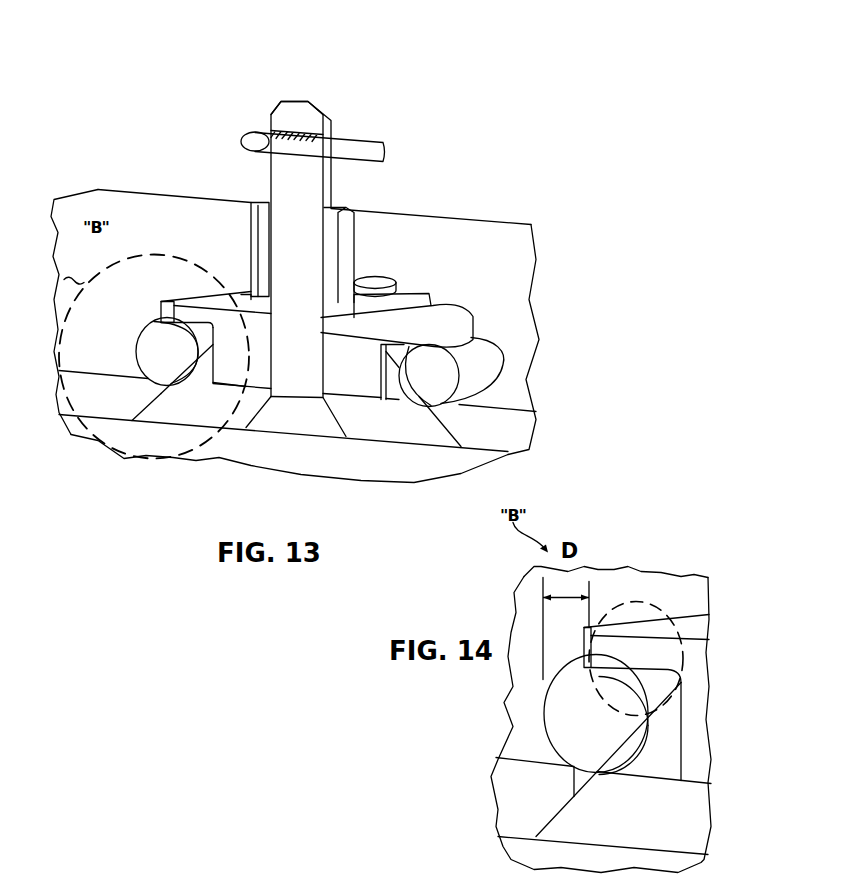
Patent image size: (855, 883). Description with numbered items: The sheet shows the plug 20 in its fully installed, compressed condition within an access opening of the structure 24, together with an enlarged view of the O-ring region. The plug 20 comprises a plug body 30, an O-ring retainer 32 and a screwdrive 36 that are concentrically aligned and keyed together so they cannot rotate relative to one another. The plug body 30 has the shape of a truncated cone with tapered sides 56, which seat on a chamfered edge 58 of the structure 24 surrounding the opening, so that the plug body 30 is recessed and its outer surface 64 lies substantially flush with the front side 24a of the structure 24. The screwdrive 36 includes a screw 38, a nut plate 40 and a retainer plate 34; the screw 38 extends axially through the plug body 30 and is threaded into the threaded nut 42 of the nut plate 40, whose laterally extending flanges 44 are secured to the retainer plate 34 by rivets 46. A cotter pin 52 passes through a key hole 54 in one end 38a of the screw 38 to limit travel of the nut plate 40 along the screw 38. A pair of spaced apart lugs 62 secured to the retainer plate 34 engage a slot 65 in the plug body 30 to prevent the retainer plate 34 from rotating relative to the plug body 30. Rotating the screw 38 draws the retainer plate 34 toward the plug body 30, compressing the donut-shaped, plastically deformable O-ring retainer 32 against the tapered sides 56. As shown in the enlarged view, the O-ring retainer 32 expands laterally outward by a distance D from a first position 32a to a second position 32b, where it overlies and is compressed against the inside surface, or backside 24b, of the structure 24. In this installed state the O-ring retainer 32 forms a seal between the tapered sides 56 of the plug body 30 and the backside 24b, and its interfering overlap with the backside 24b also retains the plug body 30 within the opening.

In FIG. 13, the plug 20 is at (196, 105).
In FIG. 13, the structure 24 is at (295, 322).
In FIG. 14, the structure 24 is at (527, 815).
In FIG. 13, the front side 24a is at (507, 463).
In FIG. 13, the backside 24b is at (70, 217).
In FIG. 14, the backside 24b is at (533, 592).
In FIG. 13, the plug body 30 is at (390, 427).
In FIG. 14, the plug body 30 is at (690, 828).
In FIG. 13, the O-ring retainer 32 is at (487, 347).
In FIG. 14, the O-ring retainer 32 is at (567, 708).
In FIG. 13, the first position 32a is at (189, 277).
In FIG. 14, the first position 32a is at (630, 602).
In FIG. 14, the second position 32b is at (535, 734).
In FIG. 13, the retainer plate 34 is at (173, 313).
In FIG. 14, the retainer plate 34 is at (658, 647).
In FIG. 13, the screwdrive 36 is at (395, 220).
In FIG. 13, the screw 38 is at (307, 180).
In FIG. 13, the end of the screw 38a is at (289, 81).
In FIG. 13, the nut plate 40 is at (247, 292).
In FIG. 13, the threaded nut 42 is at (333, 240).
In FIG. 13, the flanges 44 is at (415, 293).
In FIG. 13, the rivets 46 is at (372, 277).
In FIG. 13, the cotter pin 52 is at (262, 140).
In FIG. 13, the key hole 54 is at (338, 132).
In FIG. 13, the tapered sides 56 is at (160, 384).
In FIG. 14, the tapered sides 56 is at (567, 792).
In FIG. 13, the chamfered edge 58 is at (154, 410).
In FIG. 13, the lugs 62 is at (340, 373).
In FIG. 14, the lugs 62 is at (690, 727).
In FIG. 13, the outer surface 64 is at (210, 441).
In FIG. 13, the slot 65 is at (199, 384).